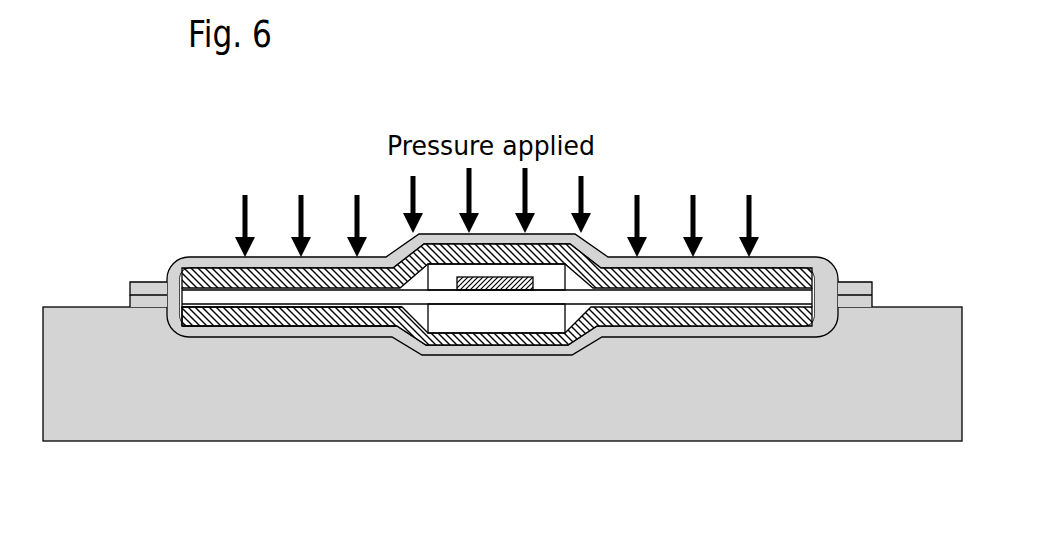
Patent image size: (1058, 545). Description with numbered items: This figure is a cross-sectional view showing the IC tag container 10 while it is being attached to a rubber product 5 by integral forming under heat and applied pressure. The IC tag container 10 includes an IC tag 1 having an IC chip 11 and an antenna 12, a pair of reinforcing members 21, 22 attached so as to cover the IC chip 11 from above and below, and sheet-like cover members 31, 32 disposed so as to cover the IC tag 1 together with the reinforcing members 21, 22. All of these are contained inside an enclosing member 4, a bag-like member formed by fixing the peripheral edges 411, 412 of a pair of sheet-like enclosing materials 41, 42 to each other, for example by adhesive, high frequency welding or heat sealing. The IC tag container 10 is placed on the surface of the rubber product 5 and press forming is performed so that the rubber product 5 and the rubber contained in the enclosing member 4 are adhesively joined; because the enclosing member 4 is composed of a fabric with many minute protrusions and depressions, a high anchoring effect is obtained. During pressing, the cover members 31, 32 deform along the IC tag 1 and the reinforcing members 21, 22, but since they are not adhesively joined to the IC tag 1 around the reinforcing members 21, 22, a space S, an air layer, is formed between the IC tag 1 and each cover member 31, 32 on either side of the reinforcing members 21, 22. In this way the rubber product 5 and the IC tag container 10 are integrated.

The IC tag container 10 is at (138, 174).
The IC tag 1 is at (496, 340).
The enclosing member 4 is at (836, 243).
The enclosing material 41 is at (783, 262).
The enclosing material 42 is at (705, 322).
The peripheral edge 411 is at (145, 290).
The peripheral edge 412 is at (141, 303).
The rubber product 5 is at (148, 425).
The IC chip 11 is at (522, 280).
The antenna 12 is at (205, 295).
The reinforcing member 21 is at (440, 277).
The reinforcing member 22 is at (533, 318).
The cover member 31 is at (223, 280).
The cover member 32 is at (253, 322).
The space S is at (417, 313).